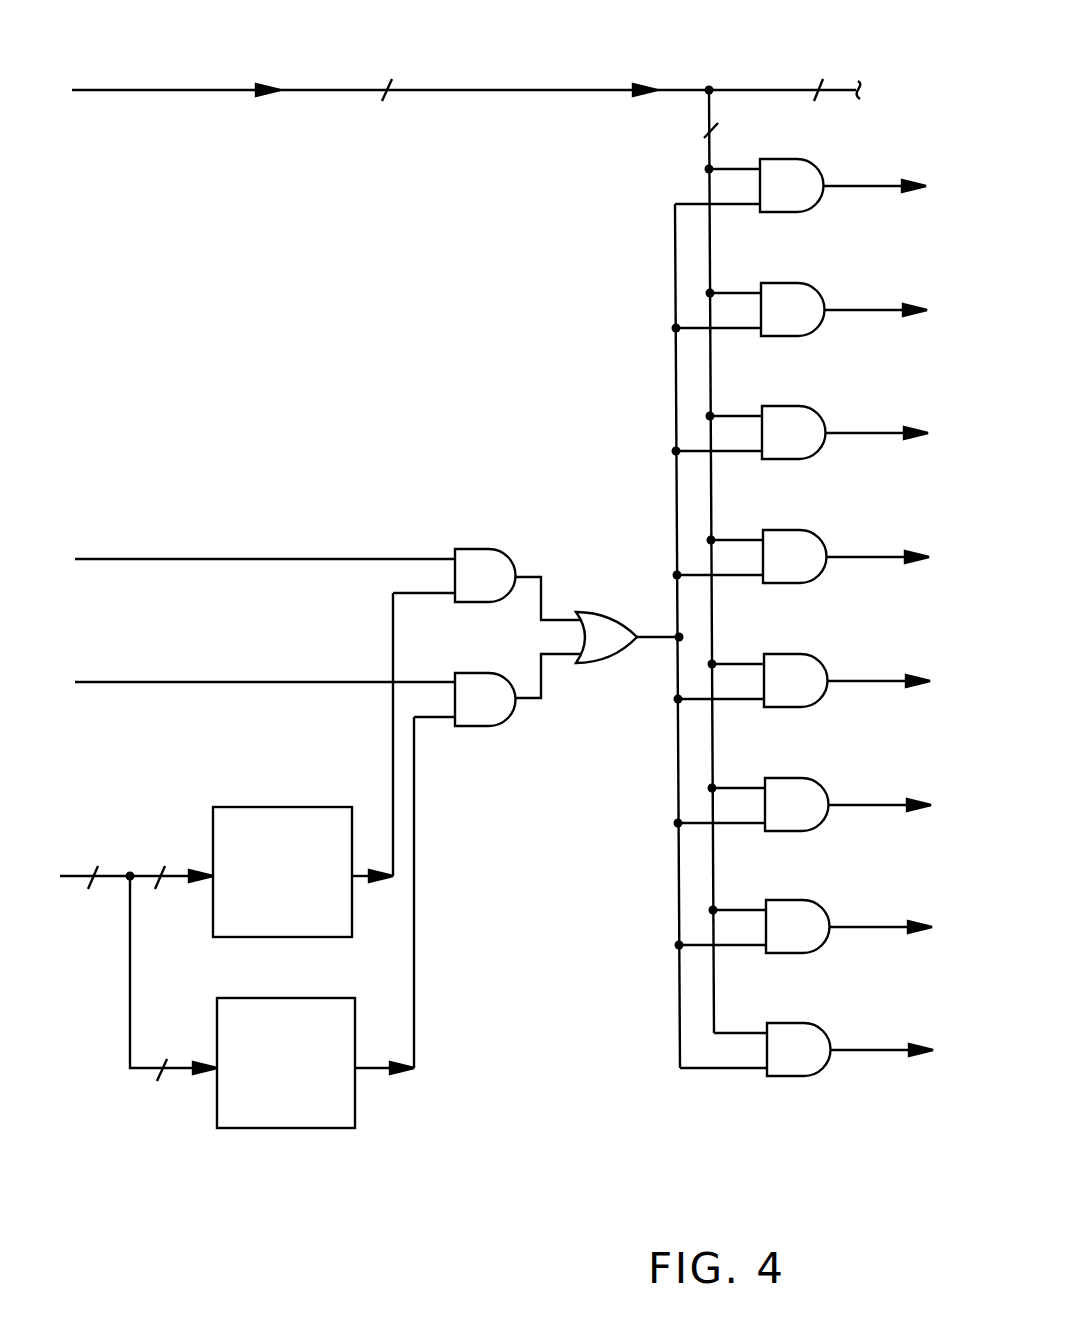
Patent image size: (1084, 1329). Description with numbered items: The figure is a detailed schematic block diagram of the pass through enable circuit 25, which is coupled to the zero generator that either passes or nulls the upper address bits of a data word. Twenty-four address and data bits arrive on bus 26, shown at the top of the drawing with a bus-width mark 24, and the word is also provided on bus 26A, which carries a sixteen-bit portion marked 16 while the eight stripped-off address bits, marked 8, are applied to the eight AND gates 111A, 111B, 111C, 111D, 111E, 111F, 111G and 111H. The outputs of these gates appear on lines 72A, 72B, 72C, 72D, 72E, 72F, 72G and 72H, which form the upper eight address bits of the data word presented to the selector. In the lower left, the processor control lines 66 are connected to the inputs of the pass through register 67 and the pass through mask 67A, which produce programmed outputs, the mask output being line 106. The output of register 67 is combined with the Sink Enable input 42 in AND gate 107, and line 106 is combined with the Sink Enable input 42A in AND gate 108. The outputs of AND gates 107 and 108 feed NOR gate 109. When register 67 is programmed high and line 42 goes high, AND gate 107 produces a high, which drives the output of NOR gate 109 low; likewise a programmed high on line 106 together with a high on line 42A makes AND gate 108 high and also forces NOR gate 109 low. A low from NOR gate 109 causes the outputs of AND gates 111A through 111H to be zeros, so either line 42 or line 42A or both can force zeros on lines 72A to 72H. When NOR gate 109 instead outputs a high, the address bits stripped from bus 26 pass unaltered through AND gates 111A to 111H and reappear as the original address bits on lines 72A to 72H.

The bus 26 is at (190, 90).
The 24-bit bus width 24 is at (390, 76).
The bus 26A is at (778, 90).
The 16-bit bus width 16 is at (824, 76).
The 8-bit bus width 8 is at (696, 136).
The AND gate 111A is at (808, 165).
The AND gate 111B is at (809, 289).
The AND gate 111C is at (810, 412).
The AND gate 111D is at (811, 536).
The AND gate 111E is at (812, 660).
The AND gate 111F is at (813, 784).
The AND gate 111G is at (814, 906).
The AND gate 111H is at (815, 1029).
The line 72A is at (871, 189).
The line 72B is at (872, 313).
The line 72C is at (873, 436).
The line 72D is at (874, 560).
The line 72E is at (875, 684).
The line 72F is at (876, 808).
The line 72G is at (877, 930).
The line 72H is at (878, 1053).
The Sink Enable input line 42 is at (260, 558).
The Sink Enable input line 42A is at (262, 681).
The AND gate 107 is at (476, 552).
The AND gate 108 is at (494, 718).
The NOR gate 109 is at (608, 628).
The pass through register 67 is at (277, 806).
The pass through mask 67A is at (270, 1129).
The line 106 is at (415, 1003).
The processor control lines 66 is at (127, 877).
The pass through enable circuit 25 is at (580, 1113).